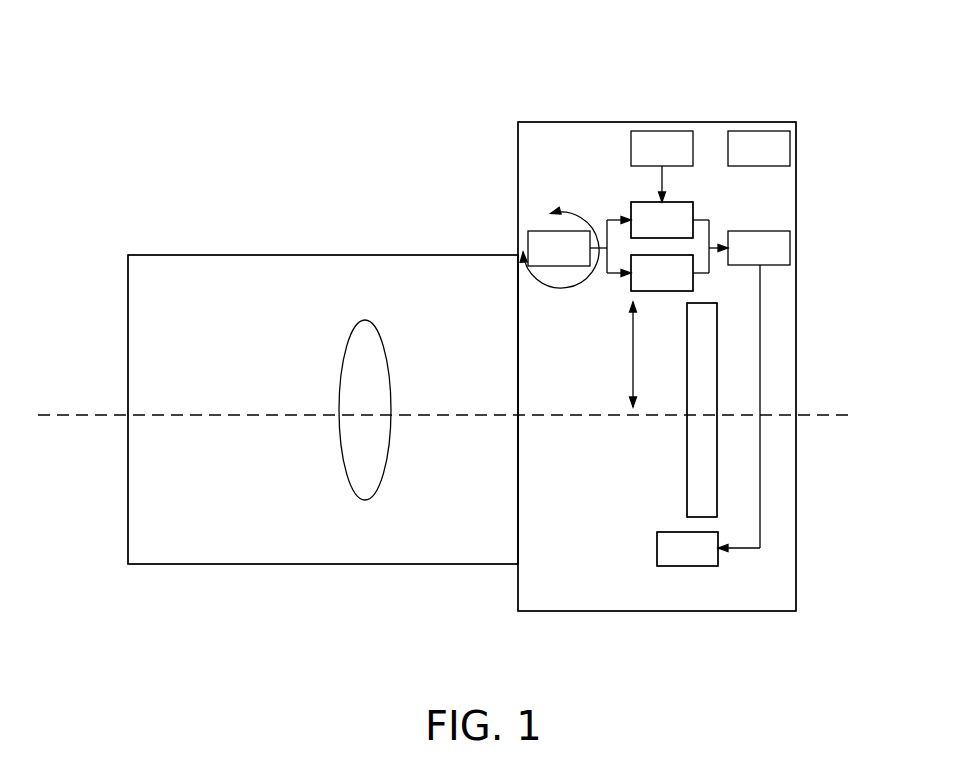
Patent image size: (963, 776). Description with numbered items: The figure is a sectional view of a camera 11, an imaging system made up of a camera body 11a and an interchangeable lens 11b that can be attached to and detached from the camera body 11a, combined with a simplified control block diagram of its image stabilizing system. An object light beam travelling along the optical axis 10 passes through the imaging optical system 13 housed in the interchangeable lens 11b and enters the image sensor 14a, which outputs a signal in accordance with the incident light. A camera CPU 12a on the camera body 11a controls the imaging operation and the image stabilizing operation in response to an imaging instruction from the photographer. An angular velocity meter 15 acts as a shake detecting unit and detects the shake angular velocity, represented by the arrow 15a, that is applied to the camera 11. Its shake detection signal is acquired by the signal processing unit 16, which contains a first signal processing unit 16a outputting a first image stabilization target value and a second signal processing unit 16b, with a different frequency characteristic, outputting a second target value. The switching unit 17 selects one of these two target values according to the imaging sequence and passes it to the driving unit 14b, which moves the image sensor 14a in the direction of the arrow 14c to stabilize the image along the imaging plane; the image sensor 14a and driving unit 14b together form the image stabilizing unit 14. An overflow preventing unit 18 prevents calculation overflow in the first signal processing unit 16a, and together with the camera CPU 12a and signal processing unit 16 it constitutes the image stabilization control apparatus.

The optical axis 10 is at (75, 415).
The camera 11 is at (267, 127).
The camera body 11a is at (600, 122).
The interchangeable lens 11b is at (233, 255).
The camera CPU 12a is at (762, 131).
The imaging optical system 13 is at (362, 459).
The image stabilizing unit 14 is at (650, 433).
The image sensor 14a is at (687, 465).
The driving unit 14b is at (695, 566).
The arrow 14c is at (636, 360).
The angular velocity meter 15 is at (540, 231).
The arrow 15a is at (520, 254).
The signal processing unit 16 is at (620, 345).
The first signal processing unit 16a is at (631, 227).
The second signal processing unit 16b is at (631, 284).
The switching unit 17 is at (790, 240).
The overflow preventing unit 18 is at (657, 131).